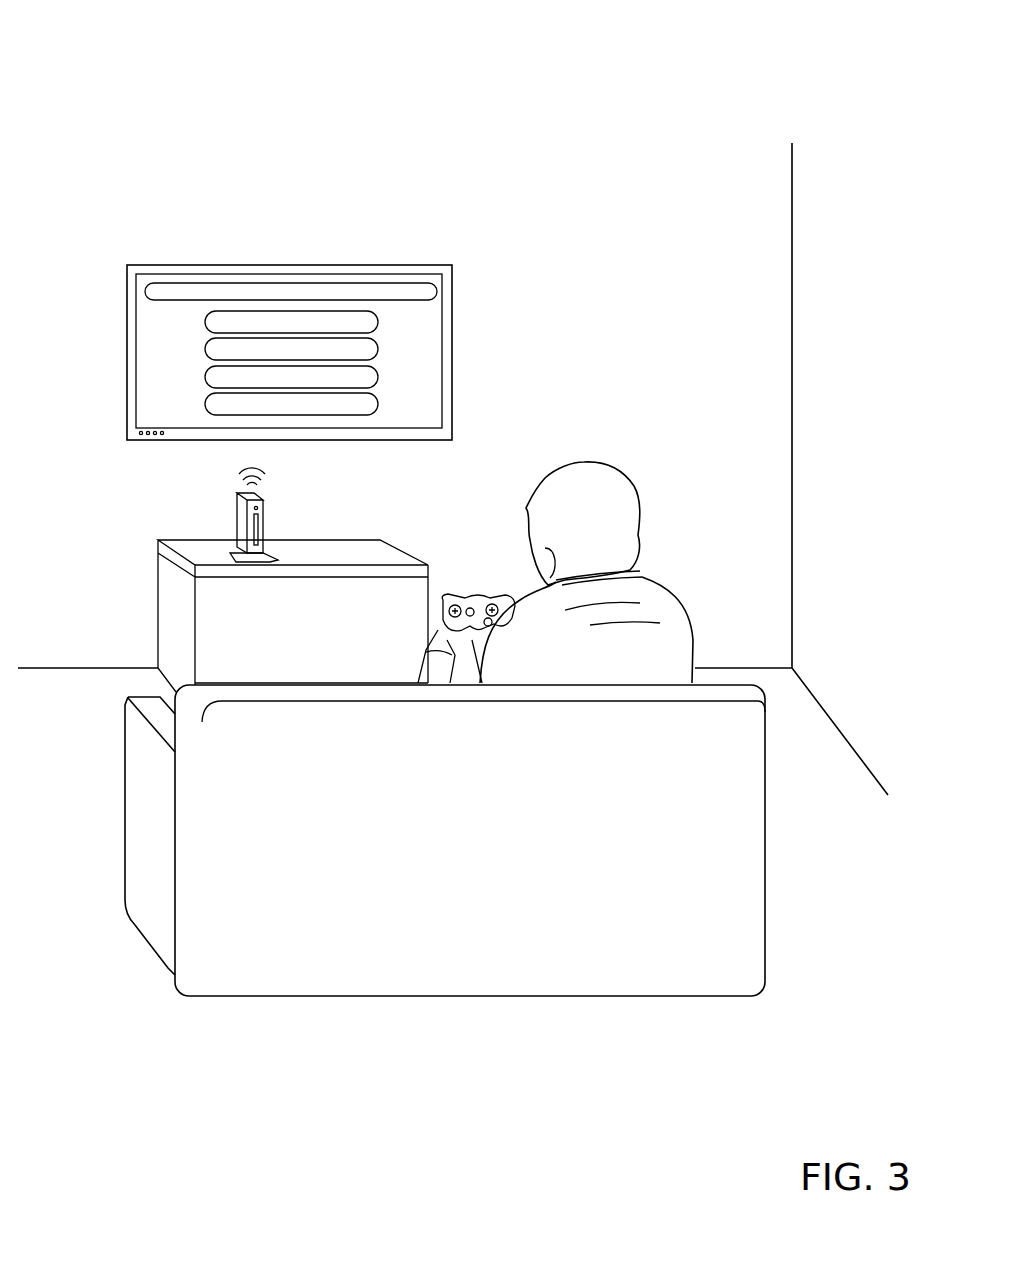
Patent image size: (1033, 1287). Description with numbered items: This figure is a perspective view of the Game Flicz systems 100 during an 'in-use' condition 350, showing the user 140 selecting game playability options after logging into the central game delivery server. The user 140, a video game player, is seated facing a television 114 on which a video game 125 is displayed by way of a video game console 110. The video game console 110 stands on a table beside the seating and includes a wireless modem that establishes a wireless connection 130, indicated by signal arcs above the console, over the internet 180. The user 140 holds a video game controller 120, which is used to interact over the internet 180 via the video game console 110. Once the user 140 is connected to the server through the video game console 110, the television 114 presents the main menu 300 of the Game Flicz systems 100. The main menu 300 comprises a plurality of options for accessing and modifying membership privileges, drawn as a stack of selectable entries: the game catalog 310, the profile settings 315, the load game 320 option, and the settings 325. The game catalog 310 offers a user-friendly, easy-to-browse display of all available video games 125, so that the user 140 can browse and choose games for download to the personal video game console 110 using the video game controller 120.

The Game Flicz systems 100 is at (648, 98).
The 'in-use' condition 350 is at (708, 143).
The television 114 is at (448, 290).
The video game 125 is at (418, 353).
The main menu 300 is at (224, 290).
The profile settings 315 is at (209, 321).
The game catalog 310 is at (209, 348).
The load game 320 is at (209, 376).
The settings 325 is at (209, 402).
The video game console 110 is at (265, 519).
The internet 180 is at (224, 548).
The wireless connection 130 is at (234, 458).
The user 140 is at (604, 661).
The video game controller 120 is at (472, 598).